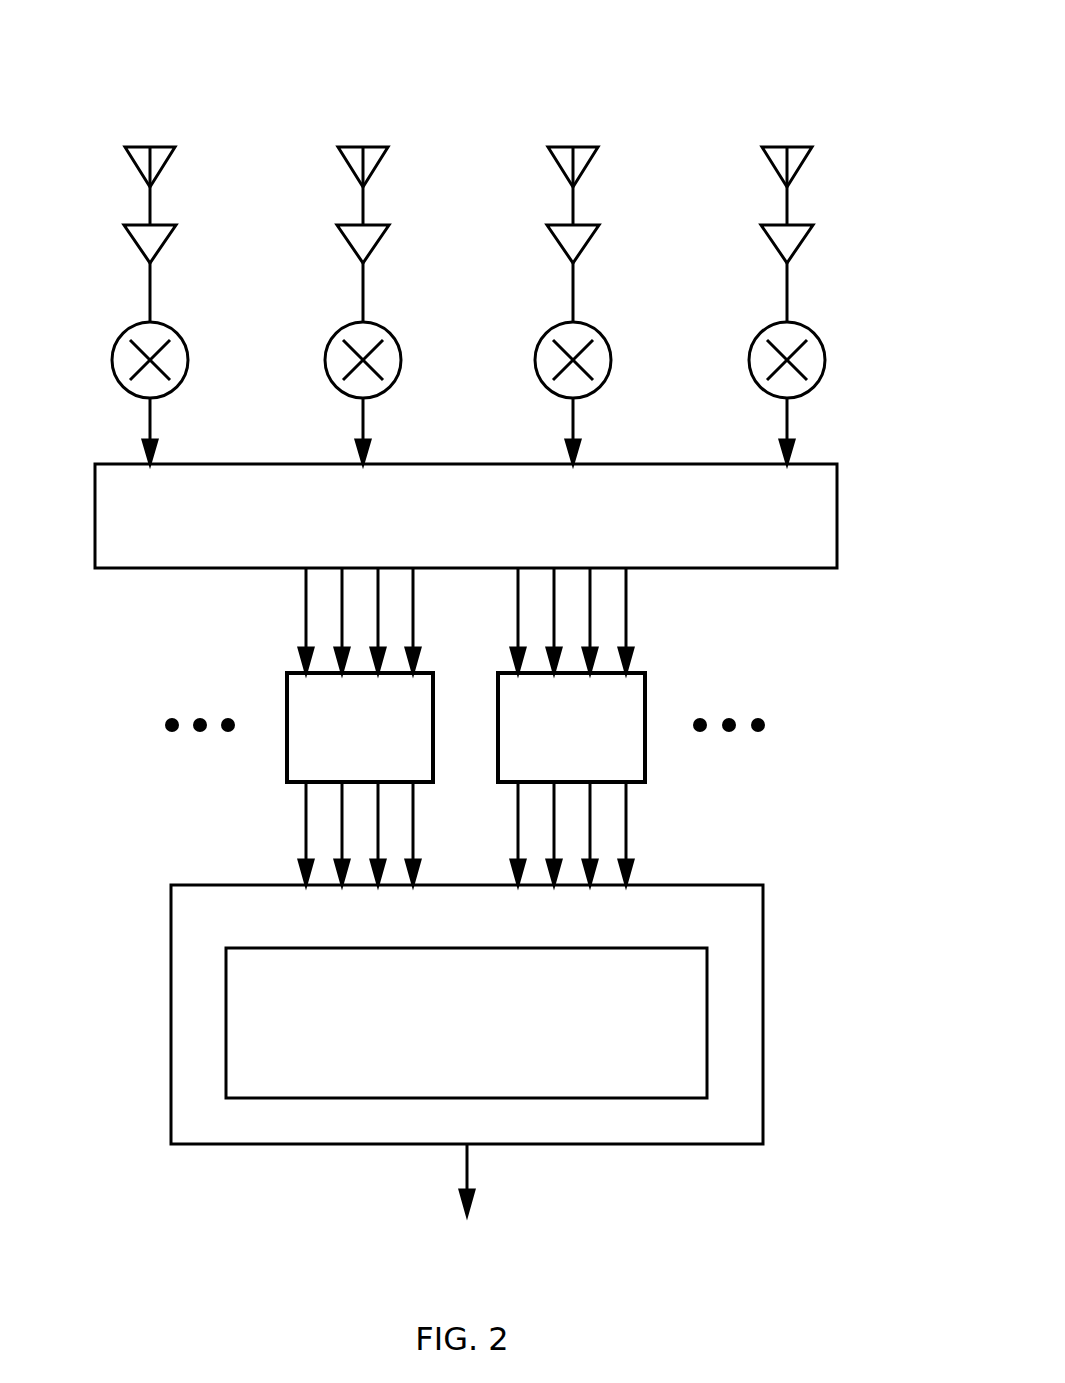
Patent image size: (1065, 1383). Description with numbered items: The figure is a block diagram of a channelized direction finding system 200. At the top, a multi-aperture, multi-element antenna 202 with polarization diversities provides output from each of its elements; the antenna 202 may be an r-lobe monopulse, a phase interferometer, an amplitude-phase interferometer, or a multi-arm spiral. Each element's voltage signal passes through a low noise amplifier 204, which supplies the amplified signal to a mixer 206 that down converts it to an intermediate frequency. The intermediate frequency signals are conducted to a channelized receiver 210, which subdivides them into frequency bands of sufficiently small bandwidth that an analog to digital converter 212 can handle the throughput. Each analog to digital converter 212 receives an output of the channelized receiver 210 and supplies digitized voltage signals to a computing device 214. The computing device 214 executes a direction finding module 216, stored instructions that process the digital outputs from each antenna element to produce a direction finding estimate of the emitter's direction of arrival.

The direction finding system 200 is at (133, 24).
The antenna 202 is at (812, 131).
The low noise amplifier 204 is at (137, 247).
The mixer 206 is at (112, 358).
The channelized receiver 210 is at (838, 510).
The analog to digital converter 212 is at (287, 762).
The computing device 214 is at (764, 910).
The direction finding module 216 is at (708, 1027).